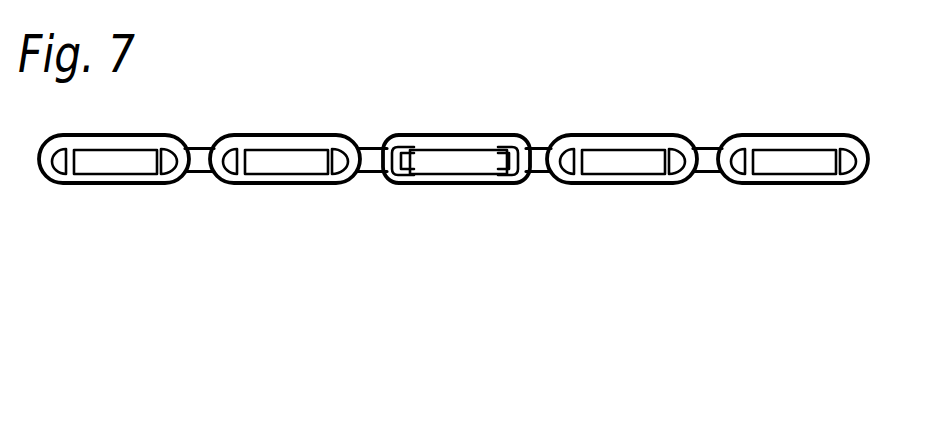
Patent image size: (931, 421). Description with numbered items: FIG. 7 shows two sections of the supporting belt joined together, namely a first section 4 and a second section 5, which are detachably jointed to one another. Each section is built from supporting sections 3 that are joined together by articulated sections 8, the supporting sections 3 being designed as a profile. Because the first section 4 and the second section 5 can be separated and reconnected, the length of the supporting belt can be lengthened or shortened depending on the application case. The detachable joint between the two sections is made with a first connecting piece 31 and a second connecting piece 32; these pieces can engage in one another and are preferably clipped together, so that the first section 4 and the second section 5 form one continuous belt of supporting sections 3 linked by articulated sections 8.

The supporting section 3 is at (277, 139).
The first connecting piece 31 is at (448, 136).
The second connecting piece 32 is at (453, 180).
The first section 4 is at (277, 207).
The second section 5 is at (630, 208).
The articulated section 8 is at (193, 172).